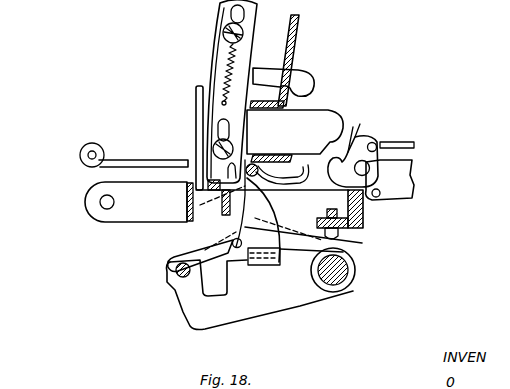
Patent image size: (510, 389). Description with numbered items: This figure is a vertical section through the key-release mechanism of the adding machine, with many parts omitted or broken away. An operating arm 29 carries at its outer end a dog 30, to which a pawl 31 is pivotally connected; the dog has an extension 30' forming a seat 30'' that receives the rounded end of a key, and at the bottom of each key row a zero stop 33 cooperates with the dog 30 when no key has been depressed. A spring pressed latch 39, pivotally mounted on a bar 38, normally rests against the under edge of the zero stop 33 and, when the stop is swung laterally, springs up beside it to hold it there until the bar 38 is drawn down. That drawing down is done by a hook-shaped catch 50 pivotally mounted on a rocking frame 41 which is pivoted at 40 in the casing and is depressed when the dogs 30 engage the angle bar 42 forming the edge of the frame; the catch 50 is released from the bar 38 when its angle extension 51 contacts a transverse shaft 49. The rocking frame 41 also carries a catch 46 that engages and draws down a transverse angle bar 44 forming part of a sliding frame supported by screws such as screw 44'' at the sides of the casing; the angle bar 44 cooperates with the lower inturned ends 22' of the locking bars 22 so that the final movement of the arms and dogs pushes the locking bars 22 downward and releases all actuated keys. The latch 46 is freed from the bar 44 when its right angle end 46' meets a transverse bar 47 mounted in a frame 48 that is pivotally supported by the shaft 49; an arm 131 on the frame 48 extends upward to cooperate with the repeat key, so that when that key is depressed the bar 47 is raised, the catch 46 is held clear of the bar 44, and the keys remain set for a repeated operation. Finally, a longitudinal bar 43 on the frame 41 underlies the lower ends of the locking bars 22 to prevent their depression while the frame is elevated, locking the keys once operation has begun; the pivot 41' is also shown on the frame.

The transverse angle bar 44 is at (239, 182).
The screw 44'' is at (290, 10).
The locking bar 22 is at (244, 102).
The lower inturned end 22' is at (108, 245).
The zero stop 33 is at (295, 115).
The spring pressed latch 39 is at (295, 163).
The dog 30 is at (383, 150).
The extension 30' is at (369, 120).
The seat 30'' is at (400, 118).
The pawl 31 is at (415, 145).
The operating arm 29 is at (400, 183).
The bar 38 is at (122, 148).
The hook-shaped catch 50 is at (162, 149).
The angle bar 42 is at (363, 223).
The arm 131 is at (338, 256).
The catch 46 is at (261, 211).
The right angle end 46' is at (206, 238).
The rocking frame 41 is at (211, 218).
The pivot pin 41' is at (234, 278).
The pivot 40 is at (100, 202).
The longitudinal bar 43 is at (187, 198).
The transverse bar 47 is at (172, 278).
The frame 48 is at (193, 303).
The angle extension 51 is at (292, 247).
The transverse shaft 49 is at (350, 270).